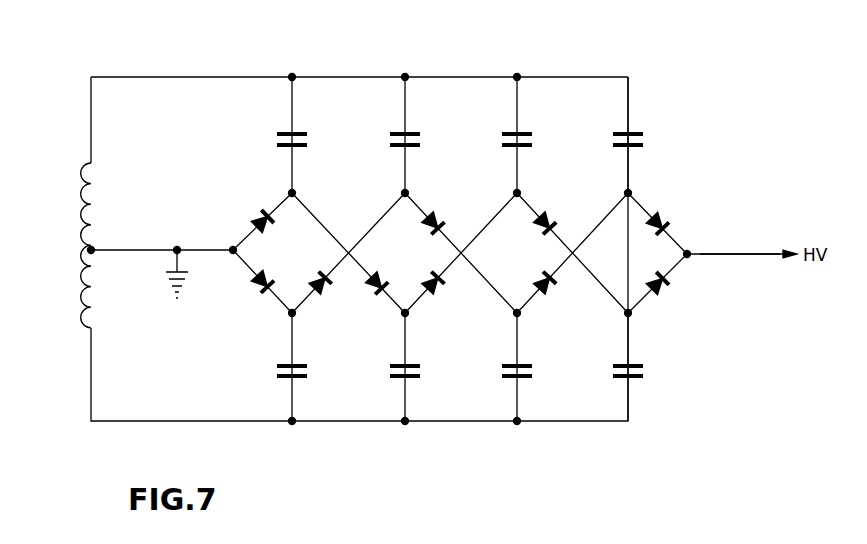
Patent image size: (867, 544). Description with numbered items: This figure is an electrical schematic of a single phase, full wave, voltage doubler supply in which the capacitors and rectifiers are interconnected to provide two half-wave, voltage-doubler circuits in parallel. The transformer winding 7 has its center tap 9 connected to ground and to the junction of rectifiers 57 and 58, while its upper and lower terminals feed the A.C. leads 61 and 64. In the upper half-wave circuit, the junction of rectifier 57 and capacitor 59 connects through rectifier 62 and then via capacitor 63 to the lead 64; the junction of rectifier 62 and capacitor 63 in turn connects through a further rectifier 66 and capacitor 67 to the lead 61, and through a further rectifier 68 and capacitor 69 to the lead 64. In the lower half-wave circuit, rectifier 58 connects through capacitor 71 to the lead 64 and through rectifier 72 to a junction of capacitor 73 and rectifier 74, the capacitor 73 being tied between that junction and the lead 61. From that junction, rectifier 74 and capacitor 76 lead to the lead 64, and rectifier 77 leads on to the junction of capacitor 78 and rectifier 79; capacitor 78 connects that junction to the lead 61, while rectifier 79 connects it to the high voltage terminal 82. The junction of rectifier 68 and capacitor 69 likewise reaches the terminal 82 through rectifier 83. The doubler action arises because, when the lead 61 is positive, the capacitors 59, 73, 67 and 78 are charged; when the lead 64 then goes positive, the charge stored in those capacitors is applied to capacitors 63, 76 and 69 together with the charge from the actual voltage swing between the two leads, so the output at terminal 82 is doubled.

The transformer secondary winding 7 is at (82, 284).
The center tap 9 is at (91, 250).
The rectifier 57 is at (256, 216).
The rectifier 58 is at (256, 290).
The capacitor 59 is at (283, 136).
The A.C. lead 61 is at (365, 77).
The rectifier 62 is at (378, 276).
The capacitor 63 is at (420, 373).
The A.C. lead 64 is at (340, 421).
The rectifier 66 is at (440, 290).
The capacitor 67 is at (508, 138).
The rectifier 68 is at (546, 216).
The capacitor 69 is at (645, 373).
The capacitor 71 is at (278, 368).
The rectifier 72 is at (322, 292).
The capacitor 73 is at (396, 138).
The rectifier 74 is at (426, 214).
The capacitor 76 is at (532, 373).
The rectifier 77 is at (550, 292).
The capacitor 78 is at (645, 140).
The rectifier 79 is at (660, 220).
The high voltage terminal 82 is at (787, 258).
The rectifier 83 is at (662, 292).